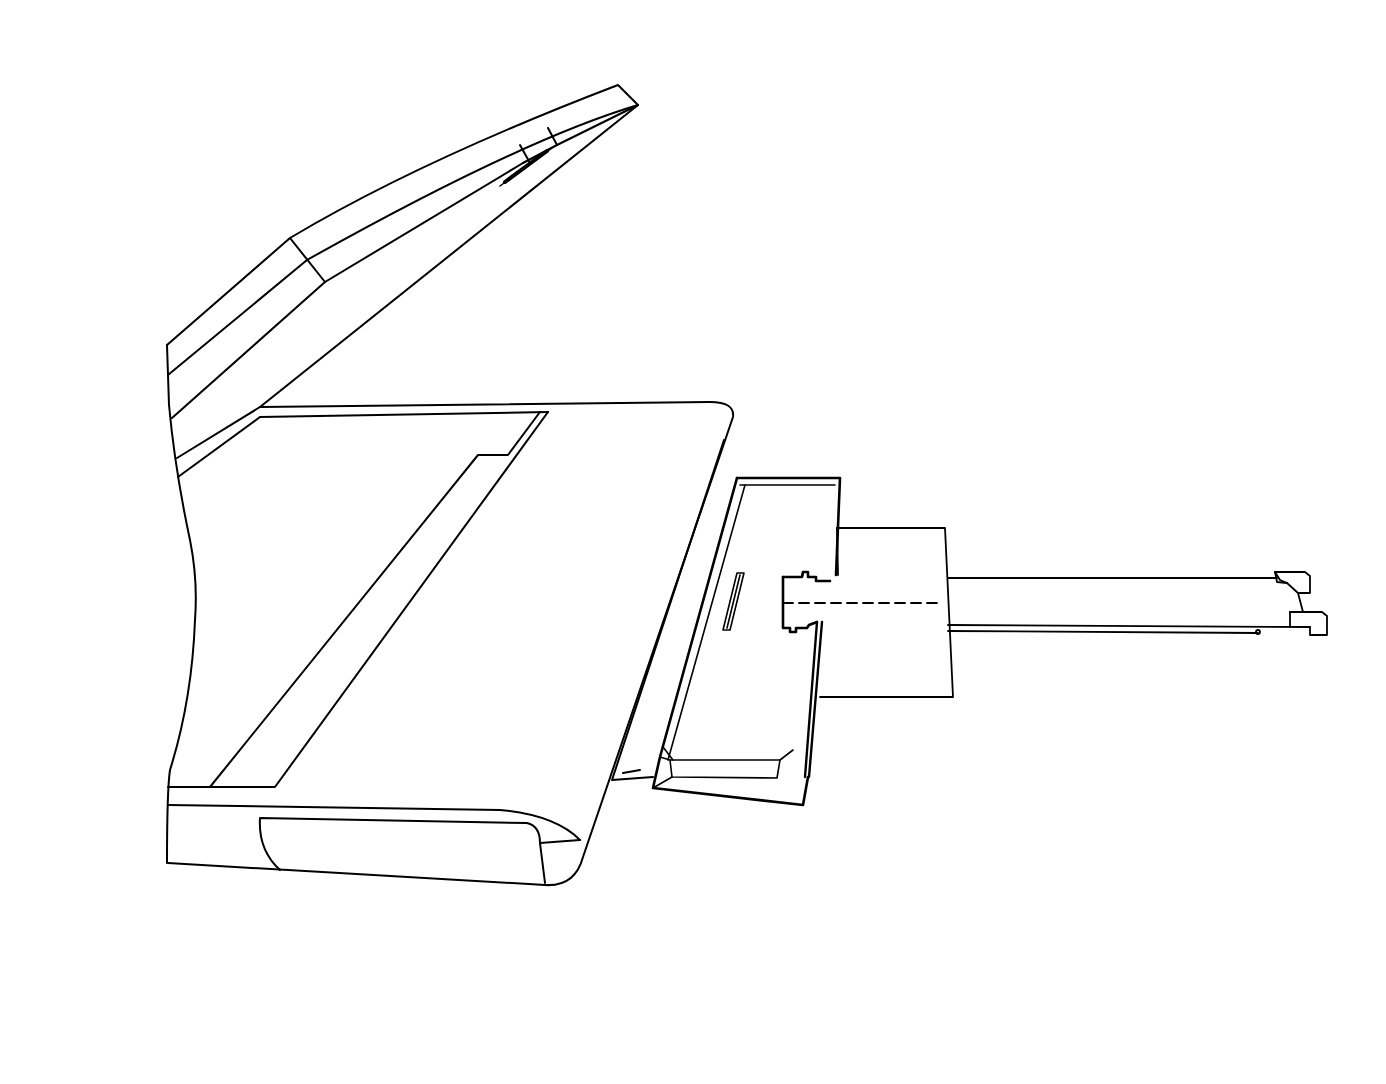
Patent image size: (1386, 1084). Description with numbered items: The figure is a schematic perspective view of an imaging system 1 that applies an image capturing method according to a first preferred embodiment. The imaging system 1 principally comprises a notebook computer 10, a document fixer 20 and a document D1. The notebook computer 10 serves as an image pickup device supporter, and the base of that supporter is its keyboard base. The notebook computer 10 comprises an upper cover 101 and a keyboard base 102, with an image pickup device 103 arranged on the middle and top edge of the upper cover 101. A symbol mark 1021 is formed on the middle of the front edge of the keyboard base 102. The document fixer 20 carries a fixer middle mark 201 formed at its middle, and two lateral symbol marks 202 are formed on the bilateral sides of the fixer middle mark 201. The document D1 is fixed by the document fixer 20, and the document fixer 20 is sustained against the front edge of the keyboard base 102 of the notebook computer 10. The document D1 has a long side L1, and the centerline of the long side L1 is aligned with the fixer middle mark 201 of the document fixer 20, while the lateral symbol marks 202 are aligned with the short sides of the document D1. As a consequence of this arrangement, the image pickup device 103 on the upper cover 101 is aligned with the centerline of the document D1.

The imaging system 1 is at (935, 119).
The notebook computer 10 is at (410, 437).
The upper cover 101 is at (238, 300).
The keyboard base 102 is at (618, 417).
The image pickup device 103 is at (538, 145).
The symbol mark 1021 is at (658, 593).
The document fixer 20 is at (680, 792).
The fixer middle mark 201 is at (767, 593).
The lateral symbol marks 202 is at (811, 521).
The document D1 is at (888, 538).
The long side L1 is at (947, 548).